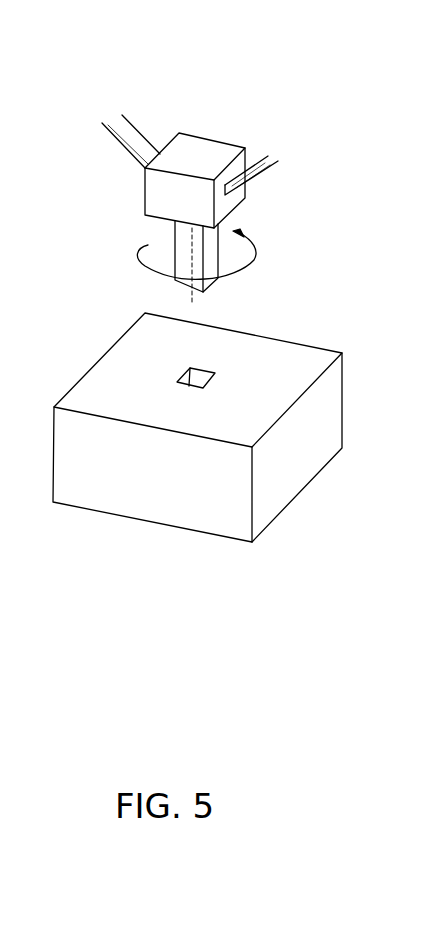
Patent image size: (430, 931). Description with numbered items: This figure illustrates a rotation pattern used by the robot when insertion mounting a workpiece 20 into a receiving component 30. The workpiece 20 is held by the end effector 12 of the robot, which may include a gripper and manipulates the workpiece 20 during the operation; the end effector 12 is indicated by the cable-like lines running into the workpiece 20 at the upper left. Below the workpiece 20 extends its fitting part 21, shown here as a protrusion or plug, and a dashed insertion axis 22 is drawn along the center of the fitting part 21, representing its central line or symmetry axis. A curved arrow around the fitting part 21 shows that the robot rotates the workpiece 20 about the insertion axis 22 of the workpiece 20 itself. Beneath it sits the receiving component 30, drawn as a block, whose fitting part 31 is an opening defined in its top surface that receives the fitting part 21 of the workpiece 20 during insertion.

The end effector 12 is at (112, 136).
The workpiece 20 is at (197, 160).
The fitting part 21 is at (172, 238).
The insertion axis 22 is at (192, 306).
The receiving component 30 is at (303, 455).
The fitting part 31 is at (186, 389).